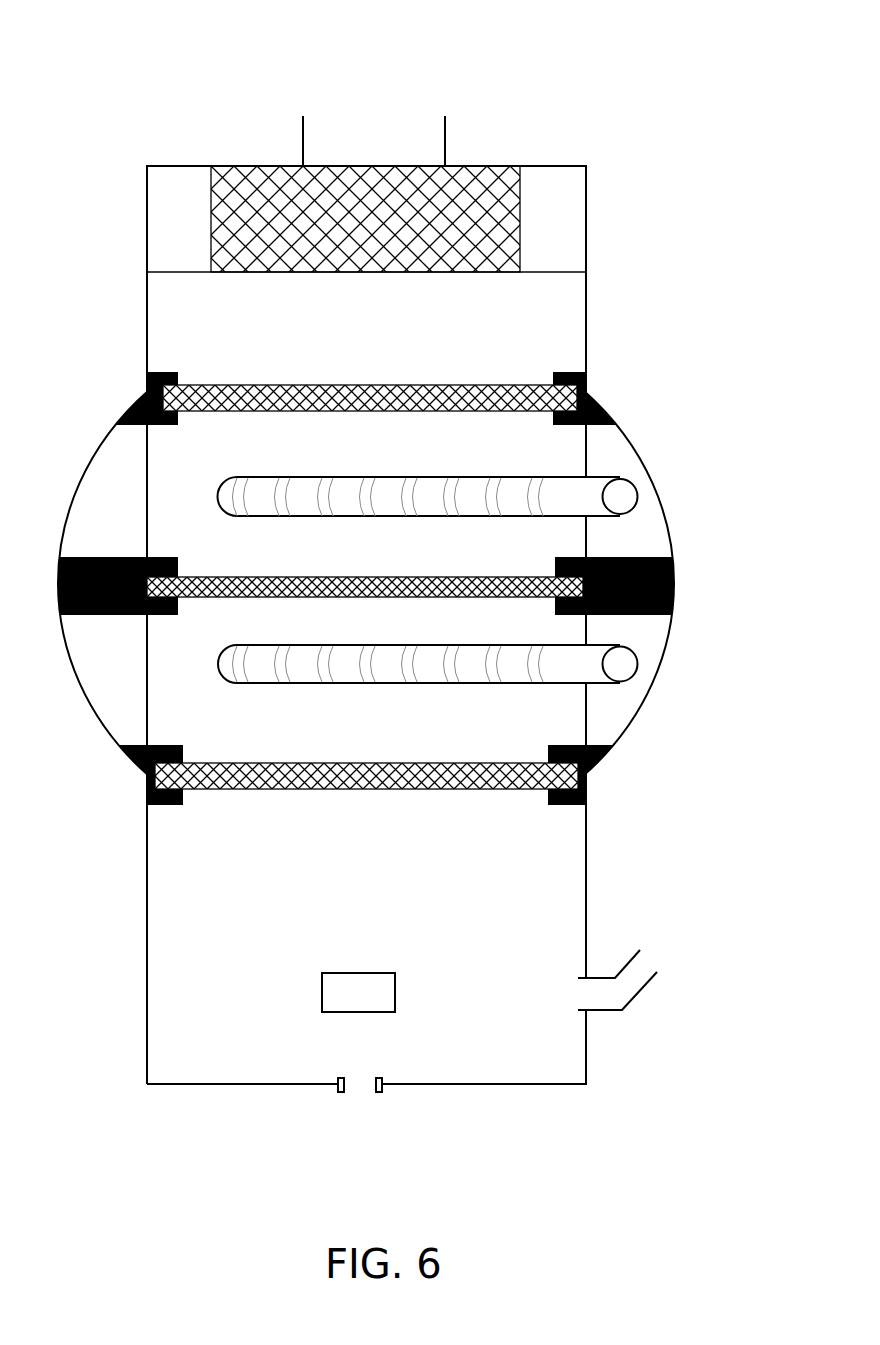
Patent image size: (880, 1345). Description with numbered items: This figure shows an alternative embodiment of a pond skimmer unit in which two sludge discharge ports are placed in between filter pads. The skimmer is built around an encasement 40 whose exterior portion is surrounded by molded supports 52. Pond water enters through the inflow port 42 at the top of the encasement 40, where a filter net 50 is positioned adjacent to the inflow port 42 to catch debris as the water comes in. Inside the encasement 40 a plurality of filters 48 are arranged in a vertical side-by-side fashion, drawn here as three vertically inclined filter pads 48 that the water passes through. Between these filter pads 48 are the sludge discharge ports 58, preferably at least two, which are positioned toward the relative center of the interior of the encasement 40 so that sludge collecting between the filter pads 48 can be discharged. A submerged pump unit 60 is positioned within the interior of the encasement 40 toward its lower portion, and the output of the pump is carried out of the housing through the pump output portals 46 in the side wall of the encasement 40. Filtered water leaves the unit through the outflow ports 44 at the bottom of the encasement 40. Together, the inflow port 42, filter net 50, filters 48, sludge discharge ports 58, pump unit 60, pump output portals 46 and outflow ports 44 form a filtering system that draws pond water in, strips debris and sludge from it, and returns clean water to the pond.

The encasement 40 is at (130, 38).
The inflow port 42 is at (374, 108).
The outflow ports 44 is at (358, 1113).
The pump output portals 46 is at (617, 990).
The filters 48 is at (508, 388).
The filter net 50 is at (558, 230).
The molded supports 52 is at (132, 402).
The sludge discharge ports 58 is at (640, 493).
The submerged pump unit 60 is at (373, 1006).